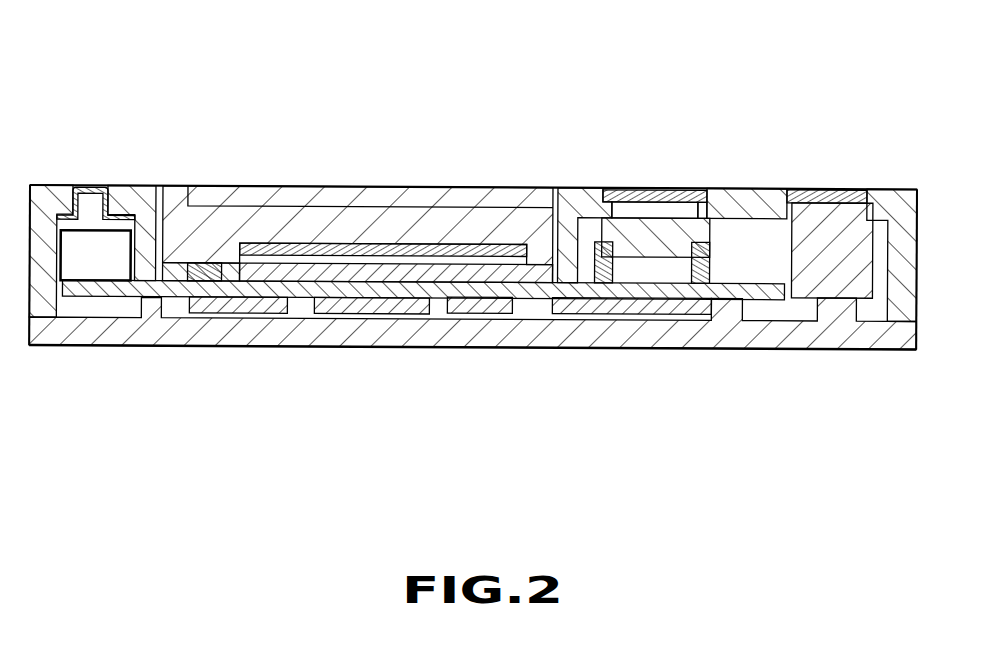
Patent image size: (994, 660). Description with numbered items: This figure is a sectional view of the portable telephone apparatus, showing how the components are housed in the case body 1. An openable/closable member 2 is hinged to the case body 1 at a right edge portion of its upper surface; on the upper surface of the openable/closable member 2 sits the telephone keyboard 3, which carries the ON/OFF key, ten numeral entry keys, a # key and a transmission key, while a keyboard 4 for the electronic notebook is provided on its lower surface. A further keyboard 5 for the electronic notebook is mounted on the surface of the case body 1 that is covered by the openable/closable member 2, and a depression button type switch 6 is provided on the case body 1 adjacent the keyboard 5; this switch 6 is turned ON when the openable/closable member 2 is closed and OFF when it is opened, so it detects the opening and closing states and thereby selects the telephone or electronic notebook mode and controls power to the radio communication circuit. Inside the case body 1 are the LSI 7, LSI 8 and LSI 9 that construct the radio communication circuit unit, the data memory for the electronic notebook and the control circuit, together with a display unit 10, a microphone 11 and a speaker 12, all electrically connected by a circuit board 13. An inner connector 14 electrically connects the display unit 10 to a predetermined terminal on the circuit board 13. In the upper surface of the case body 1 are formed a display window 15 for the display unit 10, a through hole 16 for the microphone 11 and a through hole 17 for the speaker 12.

The case body 1 is at (765, 146).
The openable/closable member 2 is at (424, 234).
The telephone keyboard 3 is at (250, 191).
The keyboard for the electronic notebook 4 is at (469, 250).
The keyboard of the electronic notebook 5 is at (483, 276).
The depression button type switch 6 is at (207, 274).
The LSI 7 is at (251, 301).
The LSI 8 is at (373, 301).
The LSI 9 is at (645, 305).
The display unit 10 is at (668, 225).
The microphone 11 is at (93, 268).
The speaker 12 is at (843, 285).
The circuit board 13 is at (531, 288).
The inner connector 14 is at (713, 264).
The display window 15 is at (623, 187).
The through hole for the microphone 16 is at (92, 187).
The through hole for the speaker 17 is at (832, 186).